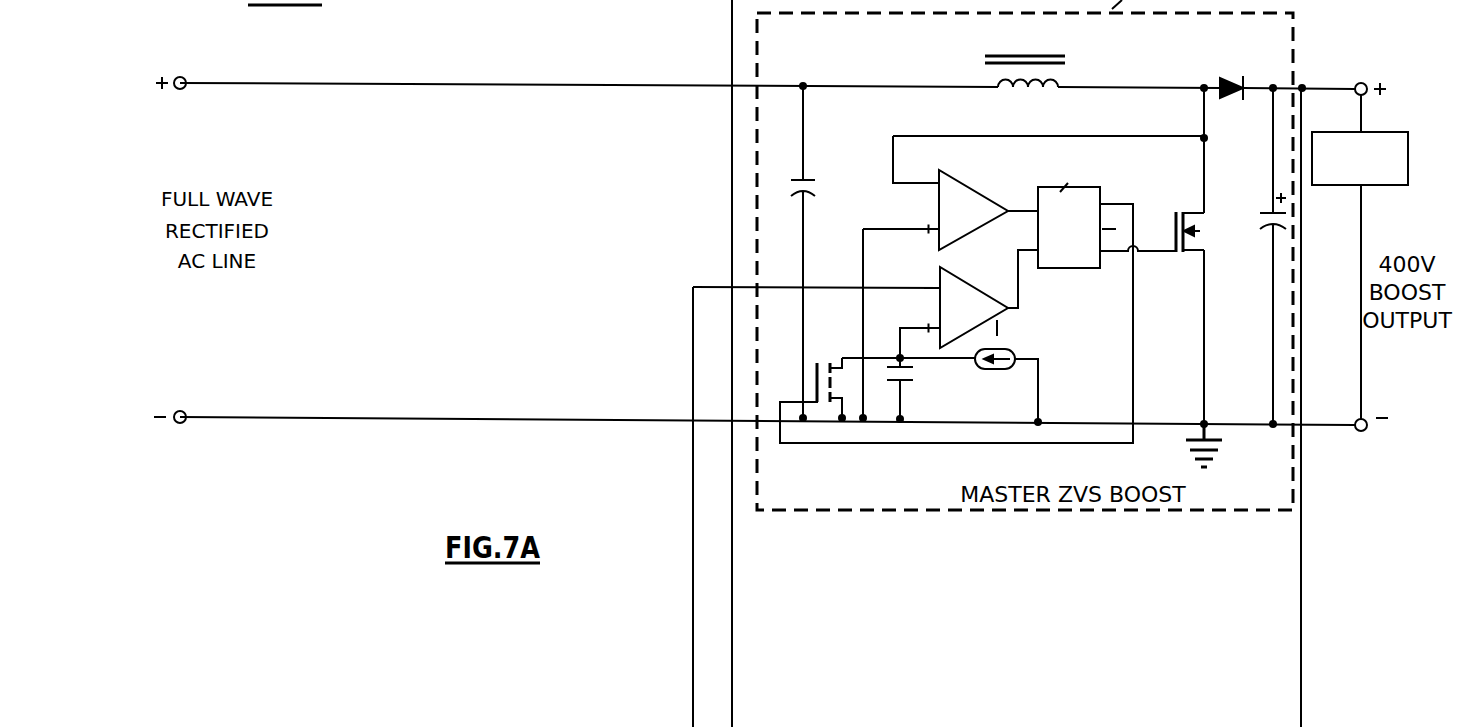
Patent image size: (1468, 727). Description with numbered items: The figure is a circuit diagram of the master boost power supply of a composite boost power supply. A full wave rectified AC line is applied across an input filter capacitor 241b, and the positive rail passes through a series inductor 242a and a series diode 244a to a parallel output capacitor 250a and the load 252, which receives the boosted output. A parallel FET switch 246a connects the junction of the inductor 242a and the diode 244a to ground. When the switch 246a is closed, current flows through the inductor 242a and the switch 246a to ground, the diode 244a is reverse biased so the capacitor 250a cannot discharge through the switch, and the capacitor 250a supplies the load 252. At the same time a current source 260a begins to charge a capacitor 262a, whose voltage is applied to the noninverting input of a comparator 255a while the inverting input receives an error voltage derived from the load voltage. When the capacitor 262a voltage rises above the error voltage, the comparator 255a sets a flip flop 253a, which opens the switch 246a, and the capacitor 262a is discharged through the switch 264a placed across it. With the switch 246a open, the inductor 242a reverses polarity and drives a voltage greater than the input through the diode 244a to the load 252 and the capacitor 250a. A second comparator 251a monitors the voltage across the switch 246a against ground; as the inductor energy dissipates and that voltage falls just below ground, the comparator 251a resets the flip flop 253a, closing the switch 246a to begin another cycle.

The input filter capacitor 241b is at (810, 178).
The series inductor 242a is at (1045, 85).
The series diode 244a is at (1222, 80).
The parallel FET switch 246a is at (1200, 229).
The parallel output capacitor 250a is at (1265, 211).
The load 252 is at (1335, 187).
The comparator 251a is at (953, 180).
The flip flop 253a is at (1094, 244).
The comparator 255a is at (992, 270).
The current source 260a is at (1012, 352).
The capacitor 262a is at (905, 383).
The reset transistor 264a is at (821, 370).